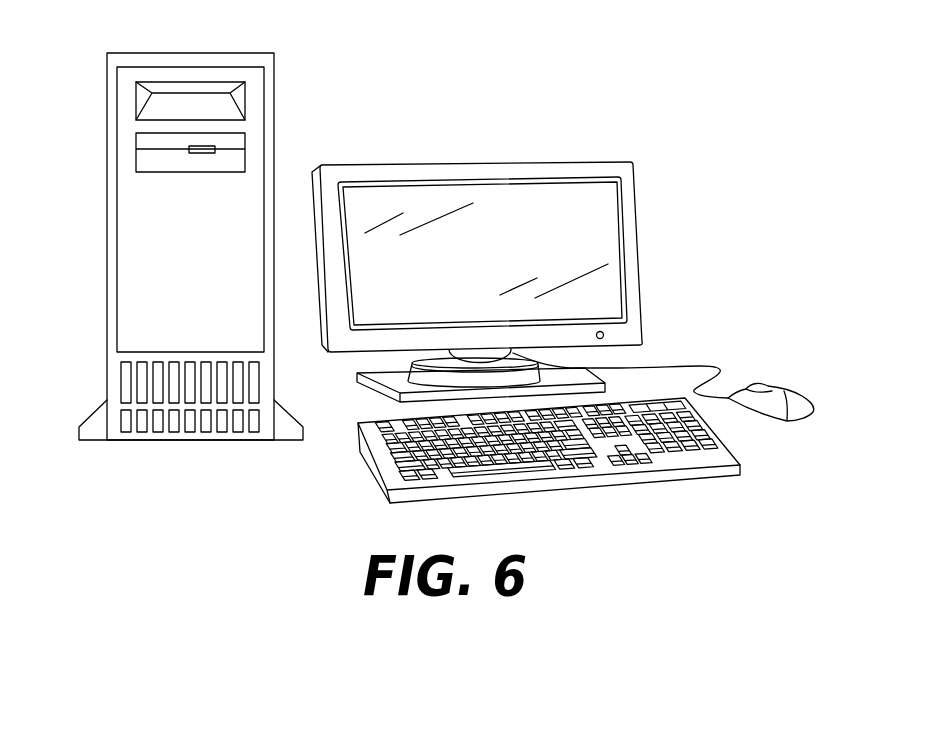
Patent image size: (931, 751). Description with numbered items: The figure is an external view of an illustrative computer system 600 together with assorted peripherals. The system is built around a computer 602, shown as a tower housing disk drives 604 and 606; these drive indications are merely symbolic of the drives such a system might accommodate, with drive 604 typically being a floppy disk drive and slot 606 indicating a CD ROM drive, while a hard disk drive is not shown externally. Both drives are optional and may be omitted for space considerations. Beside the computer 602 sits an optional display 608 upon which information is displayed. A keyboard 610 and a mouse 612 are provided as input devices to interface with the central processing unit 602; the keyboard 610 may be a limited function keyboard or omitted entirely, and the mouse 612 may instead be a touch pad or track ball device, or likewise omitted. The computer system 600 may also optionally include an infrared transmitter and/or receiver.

The computer system 600 is at (363, 132).
The computer 602 is at (107, 312).
The floppy disk drive 604 is at (136, 98).
The CD ROM slot 606 is at (136, 144).
The display 608 is at (665, 193).
The keyboard 610 is at (368, 472).
The mouse 612 is at (800, 395).